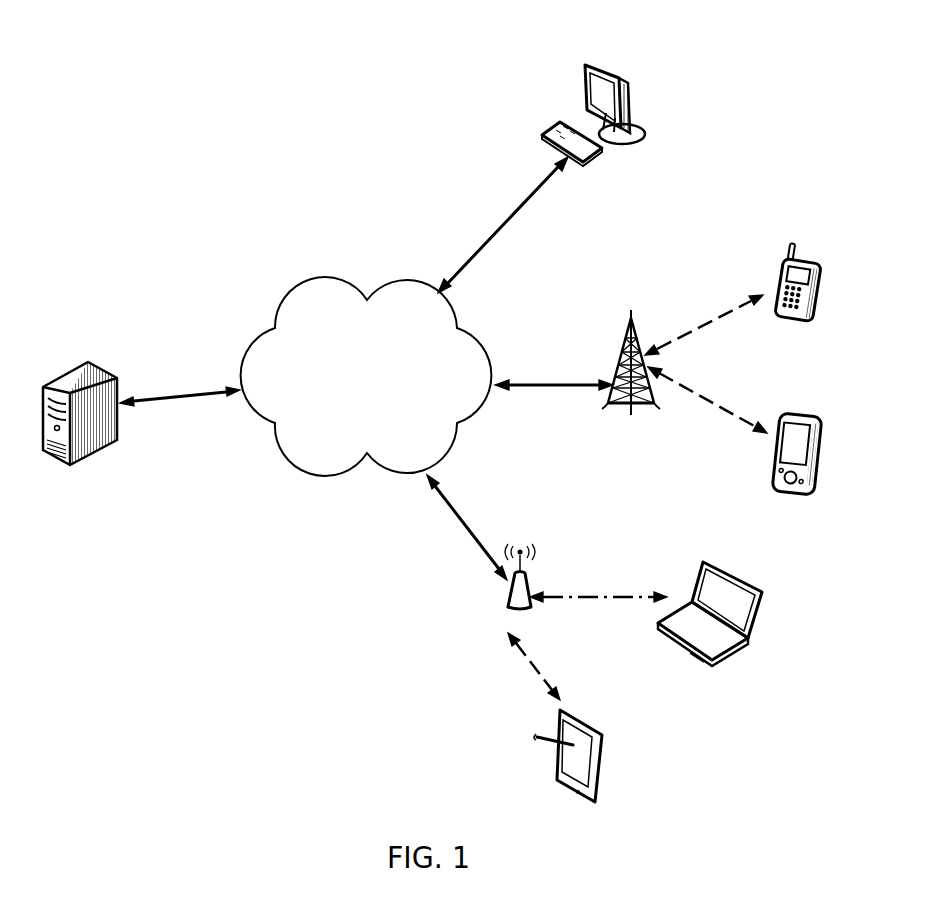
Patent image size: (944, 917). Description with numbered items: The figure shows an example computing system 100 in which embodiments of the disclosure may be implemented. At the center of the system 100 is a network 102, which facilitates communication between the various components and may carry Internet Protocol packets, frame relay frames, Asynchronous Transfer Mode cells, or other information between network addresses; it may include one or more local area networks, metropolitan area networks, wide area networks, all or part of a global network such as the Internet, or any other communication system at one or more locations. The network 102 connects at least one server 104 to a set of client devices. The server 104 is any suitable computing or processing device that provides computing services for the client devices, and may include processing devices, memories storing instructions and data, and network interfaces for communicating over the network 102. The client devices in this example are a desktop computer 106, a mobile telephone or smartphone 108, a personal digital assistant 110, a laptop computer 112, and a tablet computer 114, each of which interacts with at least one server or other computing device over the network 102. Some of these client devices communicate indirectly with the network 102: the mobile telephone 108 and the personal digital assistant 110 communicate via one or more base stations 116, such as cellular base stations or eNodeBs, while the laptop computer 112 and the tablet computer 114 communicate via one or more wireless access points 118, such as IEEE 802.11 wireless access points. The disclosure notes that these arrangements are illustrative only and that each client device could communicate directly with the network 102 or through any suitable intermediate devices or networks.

The computing system 100 is at (204, 149).
The network 102 is at (282, 291).
The server 104 is at (58, 375).
The desktop computer 106 is at (585, 65).
The mobile telephone or smartphone 108 is at (817, 262).
The personal digital assistant 110 is at (812, 430).
The laptop computer 112 is at (762, 602).
The tablet computer 114 is at (602, 753).
The base station 116 is at (652, 402).
The wireless access point 118 is at (532, 587).